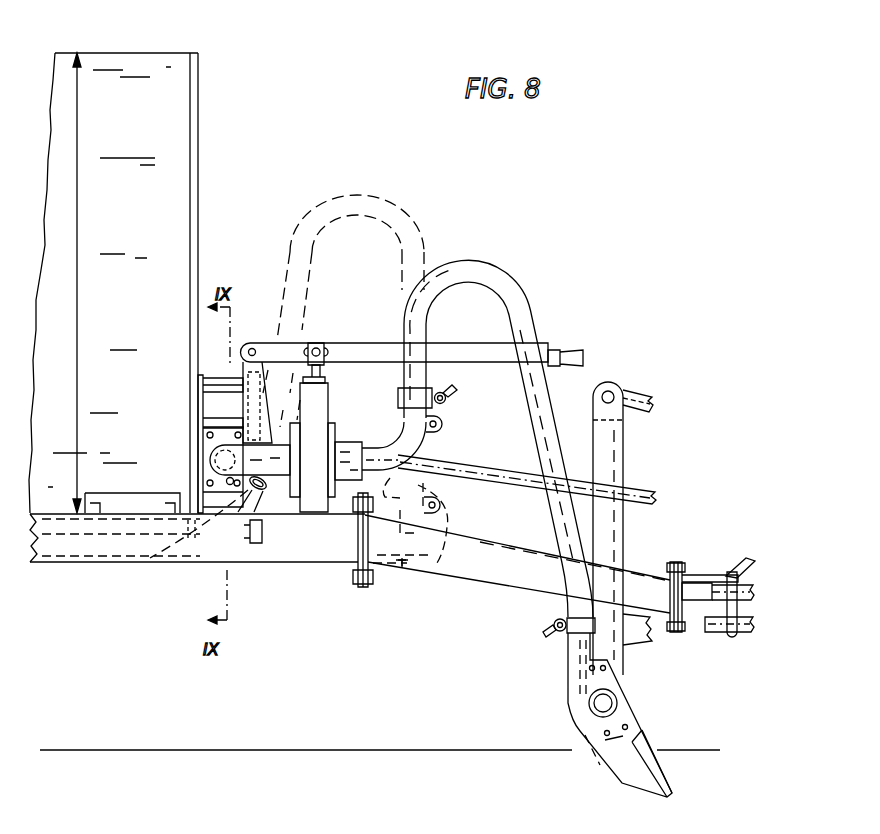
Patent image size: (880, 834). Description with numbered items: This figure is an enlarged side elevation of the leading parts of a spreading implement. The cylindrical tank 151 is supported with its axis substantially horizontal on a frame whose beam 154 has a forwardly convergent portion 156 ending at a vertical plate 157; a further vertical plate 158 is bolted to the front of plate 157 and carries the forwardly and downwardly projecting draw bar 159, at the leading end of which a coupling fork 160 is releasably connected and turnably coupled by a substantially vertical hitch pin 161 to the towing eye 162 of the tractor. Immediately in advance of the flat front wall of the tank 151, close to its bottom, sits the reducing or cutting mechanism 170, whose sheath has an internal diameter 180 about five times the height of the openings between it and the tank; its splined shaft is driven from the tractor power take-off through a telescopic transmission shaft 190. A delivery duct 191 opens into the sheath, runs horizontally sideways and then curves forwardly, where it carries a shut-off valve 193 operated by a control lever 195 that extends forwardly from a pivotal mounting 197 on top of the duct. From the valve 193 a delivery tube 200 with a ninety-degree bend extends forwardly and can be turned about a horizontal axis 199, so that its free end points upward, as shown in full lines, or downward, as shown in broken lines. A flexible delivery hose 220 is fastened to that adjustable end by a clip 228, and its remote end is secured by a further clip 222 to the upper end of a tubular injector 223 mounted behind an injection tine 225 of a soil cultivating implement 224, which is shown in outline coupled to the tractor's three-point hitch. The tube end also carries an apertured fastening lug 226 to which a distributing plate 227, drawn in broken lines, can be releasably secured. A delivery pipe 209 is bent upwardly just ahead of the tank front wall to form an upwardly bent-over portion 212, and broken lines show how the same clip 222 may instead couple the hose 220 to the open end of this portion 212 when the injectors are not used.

The tank 151 is at (132, 56).
The internal diameter 180 is at (80, 306).
The frame beam 154 is at (77, 560).
The forwardly convergent portion 156 is at (292, 563).
The delivery pipe 209 is at (30, 556).
The reducing or cutting mechanism 170 is at (198, 405).
The delivery duct 191 is at (213, 454).
The shut-off valve 193 is at (328, 410).
The control lever 195 is at (345, 347).
The pivotal mounting 197 is at (242, 363).
The flexible delivery hose 220 is at (477, 262).
The axis 199 is at (373, 460).
The delivery tube 200 is at (405, 422).
The clip 228 is at (446, 397).
The apertured fastening lug 226 is at (441, 426).
The telescopic transmission shaft 190 is at (480, 468).
The soil cultivating implement 224 is at (625, 468).
The draw bar 159 is at (520, 588).
The vertical plate 157 is at (362, 590).
The further vertical plate 158 is at (366, 590).
The upwardly bent-over portion 212 is at (262, 490).
The distributing plate 227 is at (403, 568).
The clip 222 is at (565, 635).
The tubular injector 223 is at (574, 713).
The injection tine 225 is at (644, 742).
The coupling fork 160 is at (698, 577).
The hitch pin 161 is at (744, 560).
The towing eye 162 is at (708, 598).